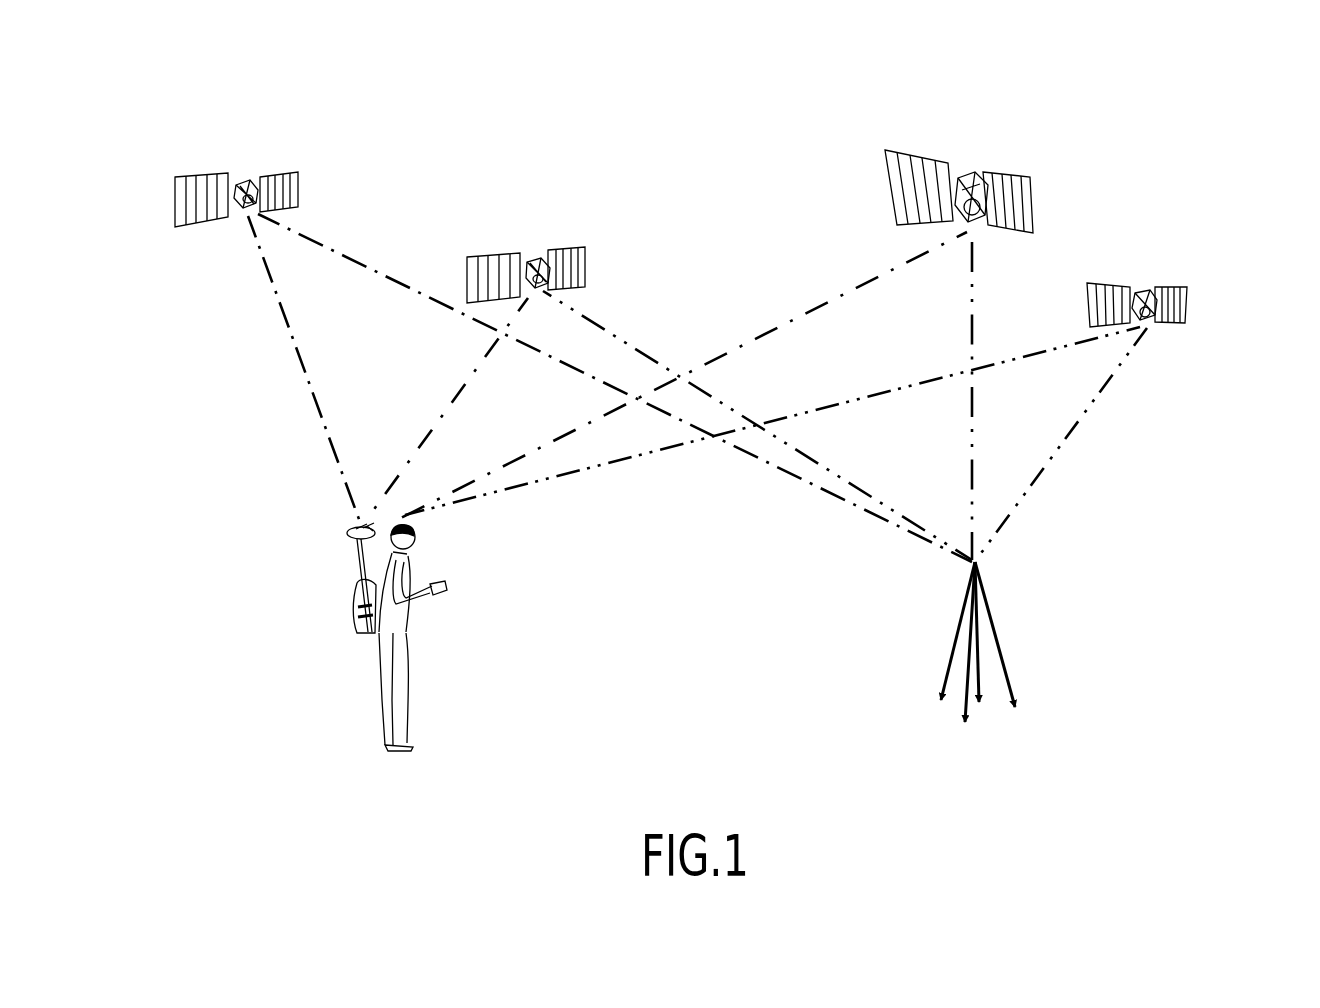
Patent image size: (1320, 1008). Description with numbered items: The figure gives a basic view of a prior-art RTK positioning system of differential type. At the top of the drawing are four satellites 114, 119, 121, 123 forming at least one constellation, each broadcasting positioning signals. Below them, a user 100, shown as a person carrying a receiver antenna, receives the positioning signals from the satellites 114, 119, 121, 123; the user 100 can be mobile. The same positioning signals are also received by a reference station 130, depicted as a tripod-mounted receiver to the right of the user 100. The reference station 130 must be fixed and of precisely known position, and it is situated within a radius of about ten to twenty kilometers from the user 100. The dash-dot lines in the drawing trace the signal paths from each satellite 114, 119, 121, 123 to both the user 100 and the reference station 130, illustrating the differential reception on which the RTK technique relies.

The user 100 is at (370, 640).
The satellite 114 is at (962, 168).
The satellite 119 is at (540, 247).
The satellite 121 is at (1165, 283).
The satellite 123 is at (238, 177).
The reference station 130 is at (952, 708).